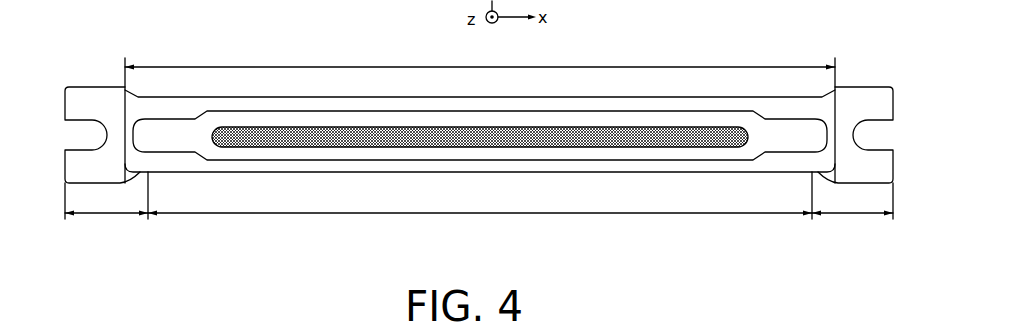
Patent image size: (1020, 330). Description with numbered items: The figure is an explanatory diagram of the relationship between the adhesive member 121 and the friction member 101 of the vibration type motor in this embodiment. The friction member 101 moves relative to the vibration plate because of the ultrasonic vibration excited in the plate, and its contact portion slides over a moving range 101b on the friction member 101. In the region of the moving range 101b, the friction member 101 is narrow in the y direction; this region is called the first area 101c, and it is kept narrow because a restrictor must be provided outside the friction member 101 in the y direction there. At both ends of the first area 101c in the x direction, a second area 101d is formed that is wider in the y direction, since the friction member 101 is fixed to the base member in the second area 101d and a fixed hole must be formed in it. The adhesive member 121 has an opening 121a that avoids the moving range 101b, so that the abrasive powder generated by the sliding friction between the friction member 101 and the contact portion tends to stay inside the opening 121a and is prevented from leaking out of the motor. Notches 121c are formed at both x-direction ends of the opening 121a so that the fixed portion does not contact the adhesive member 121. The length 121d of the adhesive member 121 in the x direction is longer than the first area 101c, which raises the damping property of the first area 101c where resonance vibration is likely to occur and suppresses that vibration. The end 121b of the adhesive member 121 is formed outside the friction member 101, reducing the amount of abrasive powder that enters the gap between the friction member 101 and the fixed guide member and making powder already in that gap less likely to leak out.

The friction member 101 is at (115, 105).
The moving range 101b is at (305, 148).
The first area 101c is at (480, 195).
The second area 101d is at (479, 201).
The adhesive member 121 is at (787, 112).
The opening 121a is at (303, 135).
The end 121b is at (265, 98).
The notches 121c is at (178, 128).
The length 121d is at (480, 109).